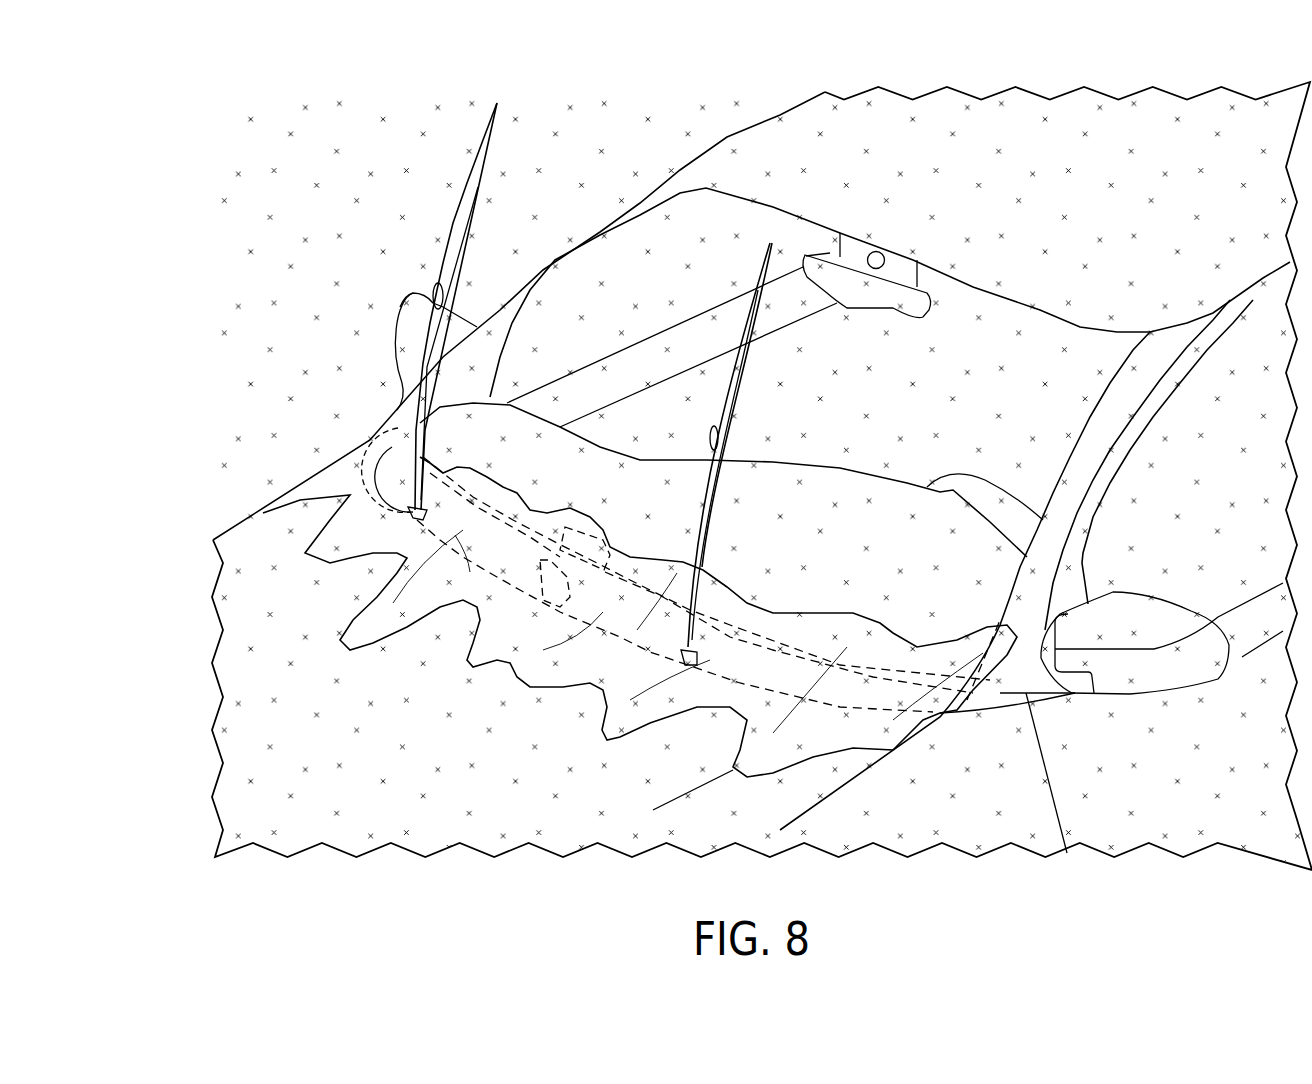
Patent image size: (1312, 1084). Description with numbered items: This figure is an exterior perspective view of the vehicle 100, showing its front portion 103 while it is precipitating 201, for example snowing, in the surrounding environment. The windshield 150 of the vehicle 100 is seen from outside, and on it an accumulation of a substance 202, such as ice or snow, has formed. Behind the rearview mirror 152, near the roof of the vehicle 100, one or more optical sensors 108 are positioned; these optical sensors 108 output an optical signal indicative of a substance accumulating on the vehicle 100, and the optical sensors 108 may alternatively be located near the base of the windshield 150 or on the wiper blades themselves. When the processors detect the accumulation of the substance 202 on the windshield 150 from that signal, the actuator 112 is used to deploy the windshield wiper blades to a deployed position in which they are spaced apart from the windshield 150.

The vehicle 100 is at (706, 452).
The front portion 103 is at (582, 384).
The precipitating 201 is at (762, 456).
The windshield 150 is at (687, 210).
The rearview mirror 152 is at (858, 233).
The optical sensor 108 is at (877, 252).
The actuator 112 is at (393, 463).
The accumulation of a substance 202 is at (827, 613).